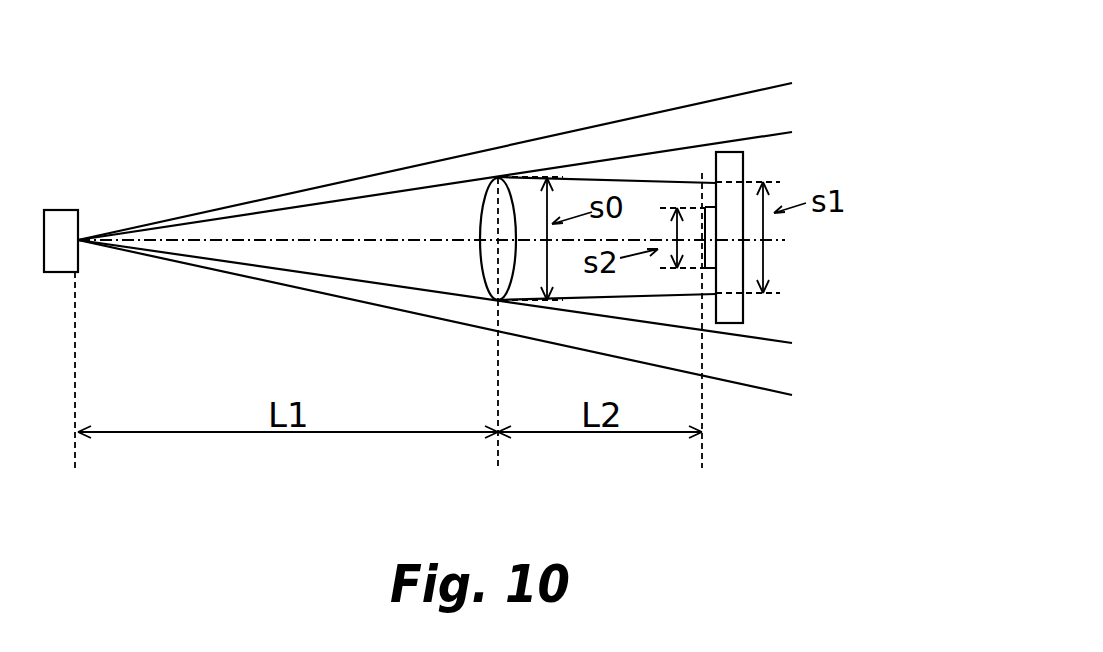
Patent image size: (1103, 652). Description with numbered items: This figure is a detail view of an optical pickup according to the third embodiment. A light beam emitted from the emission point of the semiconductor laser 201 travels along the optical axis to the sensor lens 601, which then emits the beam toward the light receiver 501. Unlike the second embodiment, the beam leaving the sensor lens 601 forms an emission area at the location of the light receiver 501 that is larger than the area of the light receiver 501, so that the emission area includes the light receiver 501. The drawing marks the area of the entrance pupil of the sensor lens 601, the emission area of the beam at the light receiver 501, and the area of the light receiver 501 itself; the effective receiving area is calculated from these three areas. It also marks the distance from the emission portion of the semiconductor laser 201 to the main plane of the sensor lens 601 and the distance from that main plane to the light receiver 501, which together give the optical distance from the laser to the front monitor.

The semiconductor laser 201 is at (63, 214).
The sensor lens 601 is at (490, 198).
The light receiver 501 is at (706, 208).